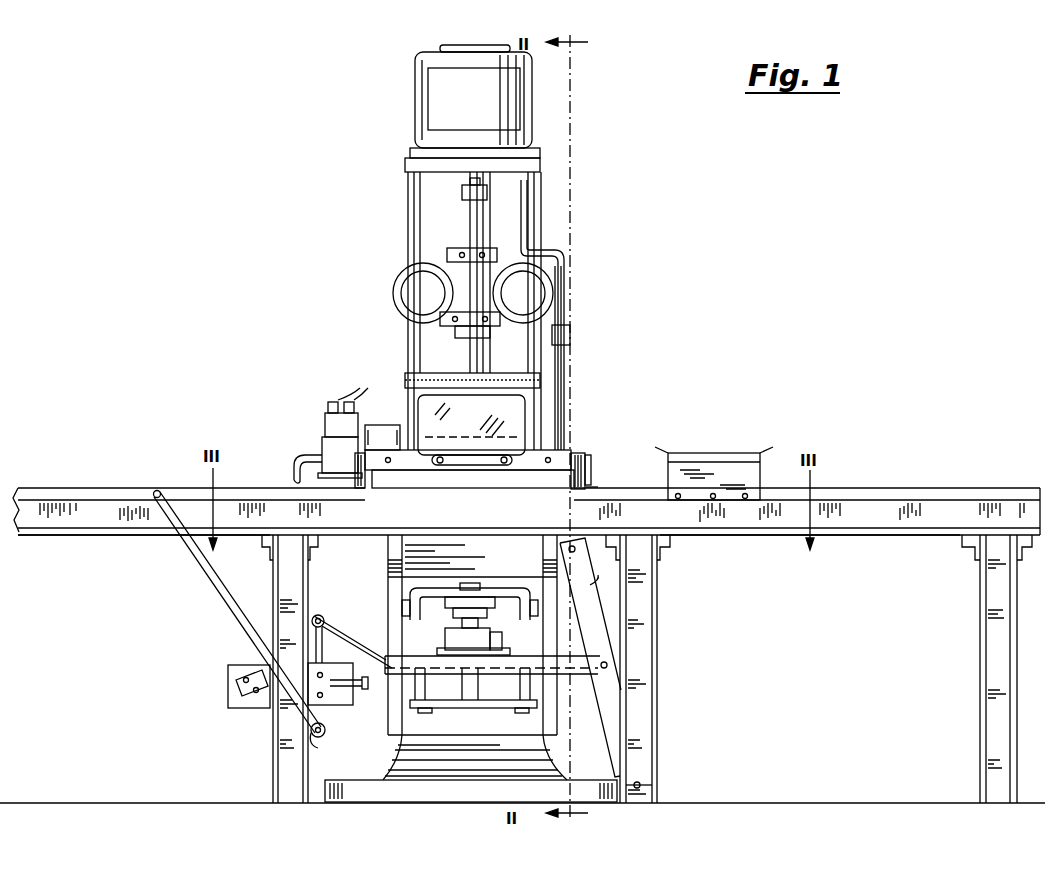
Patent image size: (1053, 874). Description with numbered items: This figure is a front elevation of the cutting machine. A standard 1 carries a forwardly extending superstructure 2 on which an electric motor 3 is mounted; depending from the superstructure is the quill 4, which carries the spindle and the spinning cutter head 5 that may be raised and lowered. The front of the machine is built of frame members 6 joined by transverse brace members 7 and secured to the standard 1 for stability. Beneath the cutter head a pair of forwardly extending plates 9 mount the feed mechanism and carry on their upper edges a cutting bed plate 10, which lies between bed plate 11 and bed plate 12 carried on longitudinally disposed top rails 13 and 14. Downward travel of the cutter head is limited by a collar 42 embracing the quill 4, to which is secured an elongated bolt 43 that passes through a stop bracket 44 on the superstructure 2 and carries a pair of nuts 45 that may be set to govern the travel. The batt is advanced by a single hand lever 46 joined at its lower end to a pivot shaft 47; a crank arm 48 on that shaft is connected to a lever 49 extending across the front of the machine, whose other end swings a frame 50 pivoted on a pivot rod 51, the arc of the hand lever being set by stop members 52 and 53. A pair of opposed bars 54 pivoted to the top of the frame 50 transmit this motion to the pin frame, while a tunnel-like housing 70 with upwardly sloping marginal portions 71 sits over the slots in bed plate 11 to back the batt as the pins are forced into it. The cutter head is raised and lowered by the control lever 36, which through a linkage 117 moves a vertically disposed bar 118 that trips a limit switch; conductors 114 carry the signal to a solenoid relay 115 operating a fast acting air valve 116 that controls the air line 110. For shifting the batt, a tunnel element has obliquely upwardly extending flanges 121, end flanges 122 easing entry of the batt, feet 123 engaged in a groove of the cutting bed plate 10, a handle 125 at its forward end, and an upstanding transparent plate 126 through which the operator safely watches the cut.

The standard 1 is at (398, 768).
The superstructure 2 is at (455, 210).
The electric motor 3 is at (440, 98).
The quill 4 is at (458, 293).
The cutter head 5 is at (403, 376).
The frame members 6 is at (273, 745).
The transverse brace members 7 is at (662, 552).
The forwardly extending plates 9 is at (388, 548).
The cutting bed plate 10 is at (495, 498).
The bed plate 11 is at (912, 500).
The bed plate 12 is at (128, 490).
The top rail 13 is at (860, 529).
The top rail 14 is at (112, 521).
The control lever 36 is at (520, 216).
The collar 42 is at (490, 320).
The elongated bolt 43 is at (470, 232).
The stop bracket 44 is at (447, 253).
The nuts 45 is at (462, 193).
The hand lever 46 is at (200, 582).
The pivot shaft 47 is at (326, 730).
The crank arm 48 is at (326, 620).
The lever 49 is at (385, 650).
The frame 50 is at (598, 634).
The pivot rod 51 is at (645, 783).
The stop member 52 is at (232, 688).
The stop member 53 is at (345, 690).
The opposed bars 54 is at (600, 575).
The tunnel-like housing 70 is at (718, 452).
The upwardly sloping marginal portions 71 is at (770, 452).
The air line 110 is at (294, 472).
The conductors 114 is at (352, 400).
The solenoid relay 115 is at (325, 420).
The air valve 116 is at (324, 455).
The linkage 117 is at (565, 285).
The vertically disposed bar 118 is at (568, 362).
The flanges 121 is at (578, 455).
The end flanges 122 is at (592, 462).
The feet 123 is at (596, 484).
The handle 125 is at (470, 466).
The upstanding plate 126 is at (510, 420).